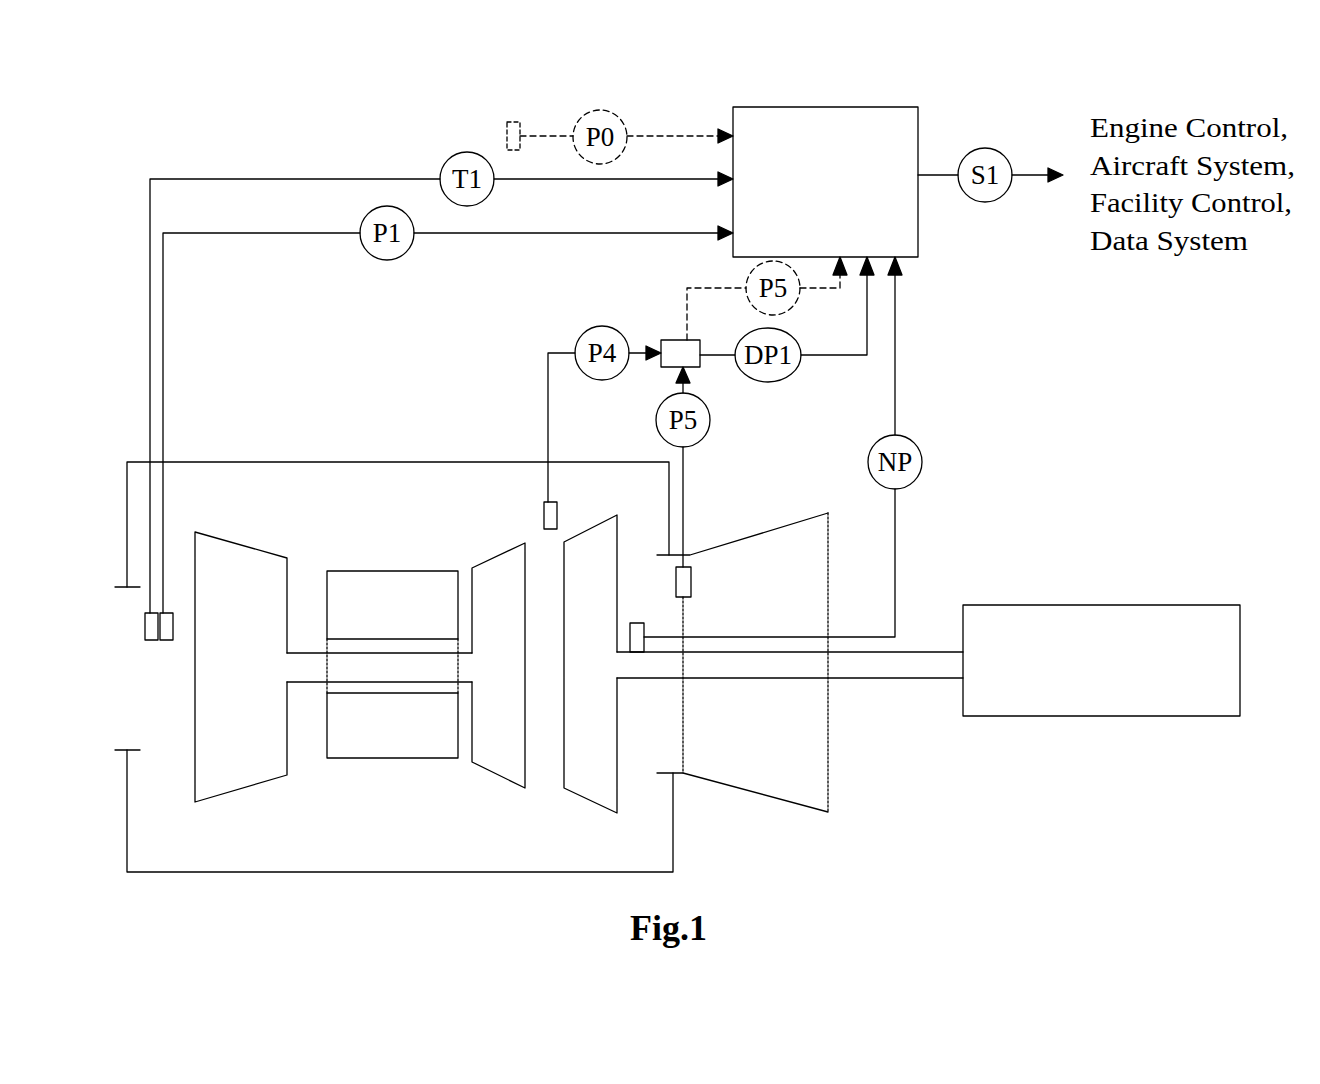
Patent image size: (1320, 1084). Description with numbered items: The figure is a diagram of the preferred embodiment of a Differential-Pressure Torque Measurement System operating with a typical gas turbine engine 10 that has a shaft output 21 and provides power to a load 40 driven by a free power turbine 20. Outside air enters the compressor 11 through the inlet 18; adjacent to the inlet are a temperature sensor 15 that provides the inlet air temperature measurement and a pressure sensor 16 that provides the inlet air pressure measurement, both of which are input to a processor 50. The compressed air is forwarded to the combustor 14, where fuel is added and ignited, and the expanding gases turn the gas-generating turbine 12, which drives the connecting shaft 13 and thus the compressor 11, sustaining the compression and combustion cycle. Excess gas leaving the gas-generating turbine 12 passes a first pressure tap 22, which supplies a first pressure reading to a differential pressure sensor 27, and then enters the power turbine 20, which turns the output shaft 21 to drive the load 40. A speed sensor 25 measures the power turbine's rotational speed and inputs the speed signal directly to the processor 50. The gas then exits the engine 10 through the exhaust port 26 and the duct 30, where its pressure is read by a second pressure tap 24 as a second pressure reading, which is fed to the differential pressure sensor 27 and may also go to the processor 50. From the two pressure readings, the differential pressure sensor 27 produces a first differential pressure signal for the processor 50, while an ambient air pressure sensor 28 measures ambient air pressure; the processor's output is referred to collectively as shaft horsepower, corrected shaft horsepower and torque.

The gas turbine engine 10 is at (357, 455).
The compressor 11 is at (226, 793).
The gas-generating turbine 12 is at (490, 768).
The connecting shaft 13 is at (297, 650).
The combustor 14 is at (400, 571).
The temperature sensor 15 is at (145, 627).
The pressure sensor 16 is at (168, 640).
The inlet 18 is at (115, 587).
The free power turbine 20 is at (575, 790).
The output shaft 21 is at (855, 680).
The first pressure tap 22 is at (540, 510).
The second pressure tap 24 is at (692, 580).
The speed sensor 25 is at (640, 622).
The exhaust port 26 is at (672, 773).
The differential pressure sensor 27 is at (668, 340).
The ambient air pressure sensor 28 is at (500, 136).
The duct 30 is at (736, 790).
The load 40 is at (1101, 660).
The processor 50 is at (825, 182).